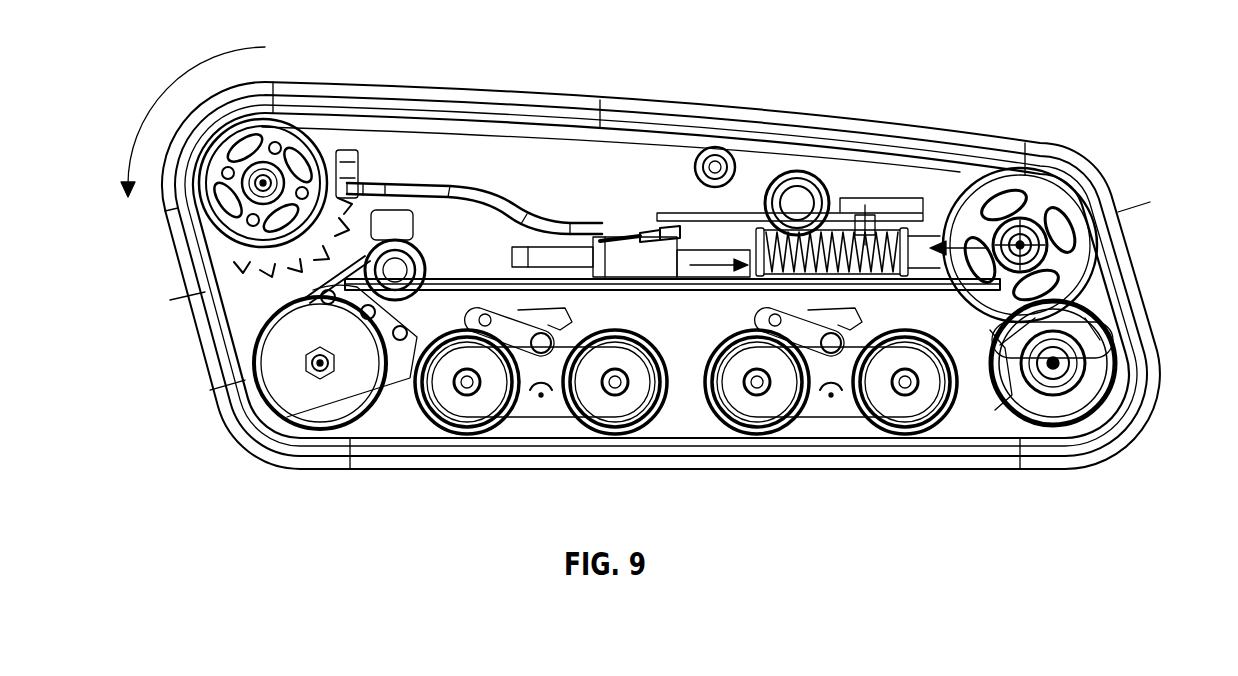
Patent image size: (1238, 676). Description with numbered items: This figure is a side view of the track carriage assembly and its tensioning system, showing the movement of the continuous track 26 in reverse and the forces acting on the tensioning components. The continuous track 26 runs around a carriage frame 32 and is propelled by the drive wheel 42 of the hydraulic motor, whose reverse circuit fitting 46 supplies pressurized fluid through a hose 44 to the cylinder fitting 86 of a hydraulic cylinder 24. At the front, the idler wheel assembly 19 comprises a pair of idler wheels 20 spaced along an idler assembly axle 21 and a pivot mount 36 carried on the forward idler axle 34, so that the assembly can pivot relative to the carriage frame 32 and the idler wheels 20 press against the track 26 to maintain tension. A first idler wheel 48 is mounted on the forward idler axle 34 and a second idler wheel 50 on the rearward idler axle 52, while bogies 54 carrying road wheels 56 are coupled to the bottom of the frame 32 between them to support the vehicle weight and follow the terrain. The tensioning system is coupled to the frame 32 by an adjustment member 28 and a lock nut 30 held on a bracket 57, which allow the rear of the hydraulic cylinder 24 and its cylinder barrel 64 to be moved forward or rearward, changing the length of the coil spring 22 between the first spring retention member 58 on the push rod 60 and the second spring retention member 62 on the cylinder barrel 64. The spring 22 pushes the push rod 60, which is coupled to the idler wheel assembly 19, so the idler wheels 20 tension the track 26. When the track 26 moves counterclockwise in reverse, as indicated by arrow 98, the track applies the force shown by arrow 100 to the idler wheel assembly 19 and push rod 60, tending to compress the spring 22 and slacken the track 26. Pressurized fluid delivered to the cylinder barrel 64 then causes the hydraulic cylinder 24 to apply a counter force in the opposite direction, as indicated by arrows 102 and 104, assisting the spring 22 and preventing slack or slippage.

The idler wheel assembly 19 is at (1050, 240).
The idler wheels 20 is at (1050, 200).
The idler assembly axle 21 is at (1028, 243).
The coil spring 22 is at (833, 218).
The hydraulic cylinder 24 is at (675, 210).
The continuous track 26 is at (168, 185).
The adjustment member 28 is at (553, 253).
The lock nut 30 is at (618, 257).
The carriage frame 32 is at (673, 323).
The forward idler axle 34 is at (1062, 370).
The pivot mount 36 is at (1080, 332).
The drive wheel 42 is at (253, 226).
The hose 44 is at (402, 188).
The reverse circuit fitting 46 is at (347, 145).
The first idler wheel 48 is at (1007, 417).
The second idler wheel 50 is at (258, 333).
The rearward idler axle 52 is at (303, 373).
The bogies 54 is at (503, 397).
The road wheels 56 is at (447, 437).
The bracket 57 is at (617, 247).
The first spring retention member 58 is at (918, 243).
The push rod 60 is at (945, 250).
The second spring retention member 62 is at (765, 222).
The cylinder barrel 64 is at (728, 217).
The cylinder fitting 86 is at (685, 218).
The arrow 98 is at (172, 92).
The arrow 100 is at (1034, 146).
The arrow 102 is at (717, 264).
The arrow 104 is at (868, 232).